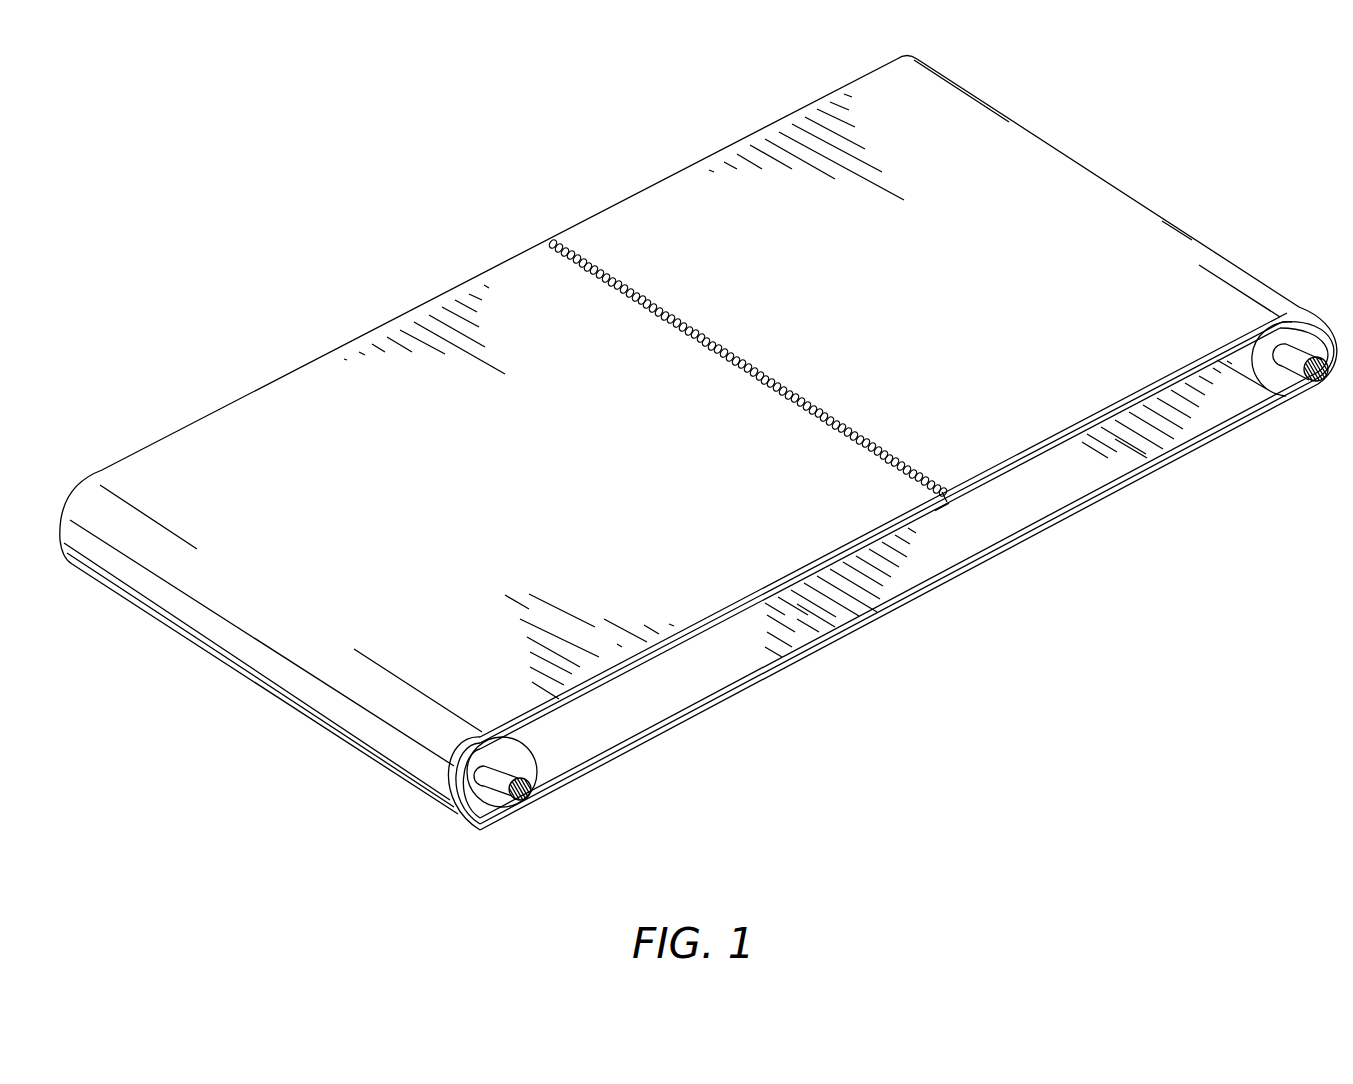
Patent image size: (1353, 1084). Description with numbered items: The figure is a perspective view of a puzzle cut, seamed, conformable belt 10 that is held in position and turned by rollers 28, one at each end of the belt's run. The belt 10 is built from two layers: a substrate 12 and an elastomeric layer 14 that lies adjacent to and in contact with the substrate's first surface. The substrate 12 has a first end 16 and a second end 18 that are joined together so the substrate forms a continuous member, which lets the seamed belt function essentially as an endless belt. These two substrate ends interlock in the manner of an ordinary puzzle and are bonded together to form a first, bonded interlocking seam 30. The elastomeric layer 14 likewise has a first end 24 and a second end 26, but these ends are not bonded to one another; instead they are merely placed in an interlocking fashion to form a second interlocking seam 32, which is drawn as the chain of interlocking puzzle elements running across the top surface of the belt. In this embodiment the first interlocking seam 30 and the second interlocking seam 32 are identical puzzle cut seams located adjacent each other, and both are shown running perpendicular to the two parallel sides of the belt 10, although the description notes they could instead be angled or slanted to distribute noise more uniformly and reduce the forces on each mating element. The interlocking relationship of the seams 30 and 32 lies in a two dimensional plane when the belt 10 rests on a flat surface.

The belt 10 is at (400, 286).
The substrate 12 is at (863, 540).
The elastomeric layer 14 is at (1113, 220).
The first end 16 is at (943, 498).
The second end 18 is at (947, 495).
The first end 24 is at (920, 496).
The second end 26 is at (944, 482).
The rollers 28 is at (1270, 385).
The first interlocking seam 30 is at (947, 497).
The second interlocking seam 32 is at (786, 386).